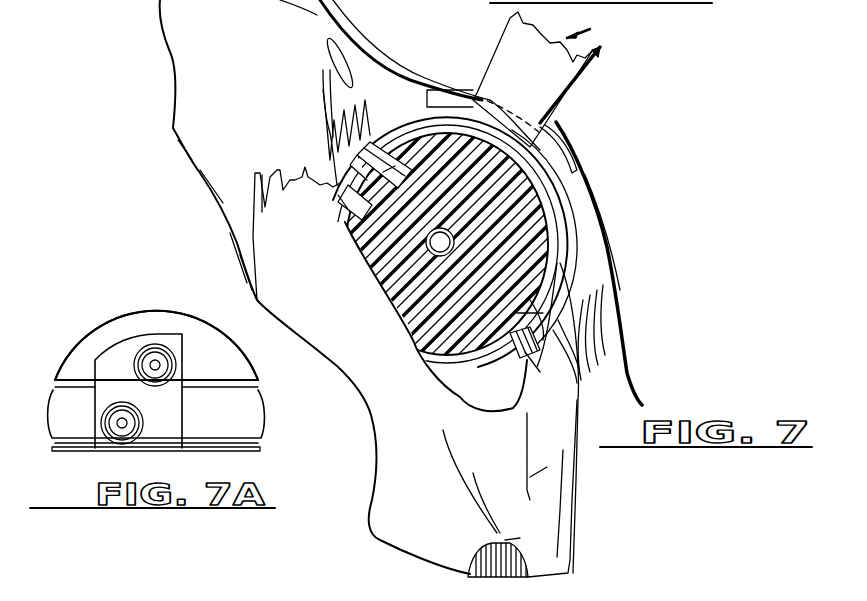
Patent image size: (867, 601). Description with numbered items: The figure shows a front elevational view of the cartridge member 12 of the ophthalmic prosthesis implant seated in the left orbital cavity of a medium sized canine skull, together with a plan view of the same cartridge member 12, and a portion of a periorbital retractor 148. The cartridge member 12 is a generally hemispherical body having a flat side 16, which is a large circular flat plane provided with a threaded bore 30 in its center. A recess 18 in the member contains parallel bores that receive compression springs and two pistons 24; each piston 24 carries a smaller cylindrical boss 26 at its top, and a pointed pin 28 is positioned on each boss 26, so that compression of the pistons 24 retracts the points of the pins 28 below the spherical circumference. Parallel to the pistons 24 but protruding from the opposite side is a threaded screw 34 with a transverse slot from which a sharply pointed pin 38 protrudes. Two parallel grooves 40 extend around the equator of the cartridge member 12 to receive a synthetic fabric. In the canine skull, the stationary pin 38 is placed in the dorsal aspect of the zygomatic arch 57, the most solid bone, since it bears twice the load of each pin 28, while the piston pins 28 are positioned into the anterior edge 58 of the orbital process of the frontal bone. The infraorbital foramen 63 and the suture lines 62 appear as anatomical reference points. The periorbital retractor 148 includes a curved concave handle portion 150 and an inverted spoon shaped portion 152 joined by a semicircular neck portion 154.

In FIG. 7A, the cartridge member 12 is at (114, 318).
In FIG. 7, the flat side 16 is at (540, 233).
In FIG. 7A, the flat side 16 is at (240, 452).
In FIG. 7A, the recess 18 is at (103, 360).
In FIG. 7, the piston 24 is at (437, 137).
In FIG. 7A, the piston 24 is at (140, 417).
In FIG. 7, the cylindrical boss 26 is at (376, 167).
In FIG. 7A, the cylindrical boss 26 is at (116, 440).
In FIG. 7, the pointed pin 28 is at (368, 157).
In FIG. 7A, the pointed pin 28 is at (156, 362).
In FIG. 7, the threaded bore 30 is at (452, 230).
In FIG. 7, the threaded screw 34 is at (533, 332).
In FIG. 7, the pointed pin 38 is at (522, 362).
In FIG. 7A, the grooves 40 is at (262, 390).
In FIG. 7, the zygomatic arch 57 is at (553, 335).
In FIG. 7, the anterior edge of the orbital process of the frontal bone 58 is at (338, 42).
In FIG. 7, the suture lines 62 is at (550, 557).
In FIG. 7, the infraorbital foramen 63 is at (517, 557).
In FIG. 7, the periorbital retractor 148 is at (585, 30).
In FIG. 7, the handle portion 150 is at (575, 80).
In FIG. 7, the spoon shaped portion 152 is at (555, 142).
In FIG. 7, the neck portion 154 is at (480, 75).